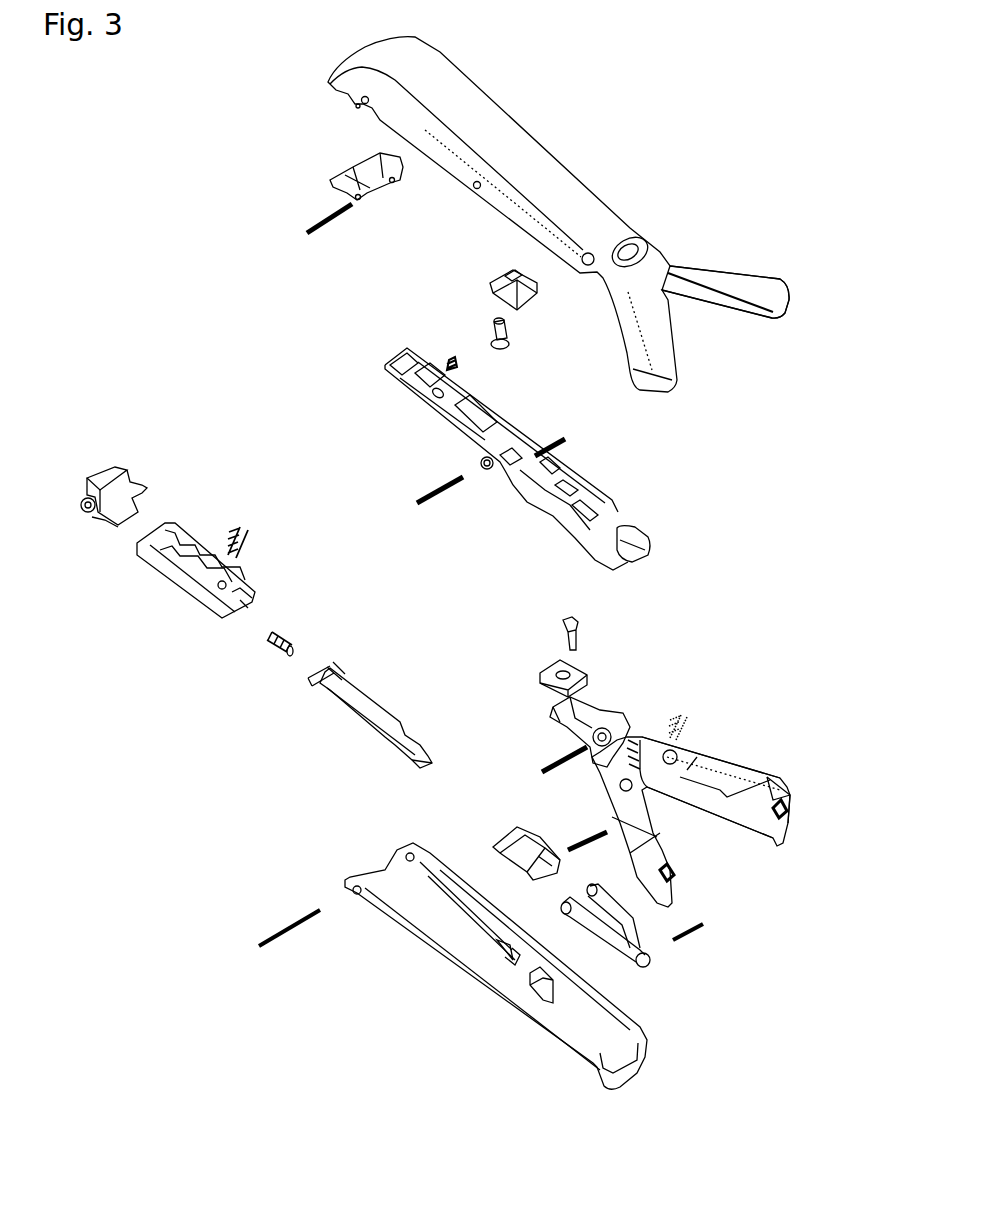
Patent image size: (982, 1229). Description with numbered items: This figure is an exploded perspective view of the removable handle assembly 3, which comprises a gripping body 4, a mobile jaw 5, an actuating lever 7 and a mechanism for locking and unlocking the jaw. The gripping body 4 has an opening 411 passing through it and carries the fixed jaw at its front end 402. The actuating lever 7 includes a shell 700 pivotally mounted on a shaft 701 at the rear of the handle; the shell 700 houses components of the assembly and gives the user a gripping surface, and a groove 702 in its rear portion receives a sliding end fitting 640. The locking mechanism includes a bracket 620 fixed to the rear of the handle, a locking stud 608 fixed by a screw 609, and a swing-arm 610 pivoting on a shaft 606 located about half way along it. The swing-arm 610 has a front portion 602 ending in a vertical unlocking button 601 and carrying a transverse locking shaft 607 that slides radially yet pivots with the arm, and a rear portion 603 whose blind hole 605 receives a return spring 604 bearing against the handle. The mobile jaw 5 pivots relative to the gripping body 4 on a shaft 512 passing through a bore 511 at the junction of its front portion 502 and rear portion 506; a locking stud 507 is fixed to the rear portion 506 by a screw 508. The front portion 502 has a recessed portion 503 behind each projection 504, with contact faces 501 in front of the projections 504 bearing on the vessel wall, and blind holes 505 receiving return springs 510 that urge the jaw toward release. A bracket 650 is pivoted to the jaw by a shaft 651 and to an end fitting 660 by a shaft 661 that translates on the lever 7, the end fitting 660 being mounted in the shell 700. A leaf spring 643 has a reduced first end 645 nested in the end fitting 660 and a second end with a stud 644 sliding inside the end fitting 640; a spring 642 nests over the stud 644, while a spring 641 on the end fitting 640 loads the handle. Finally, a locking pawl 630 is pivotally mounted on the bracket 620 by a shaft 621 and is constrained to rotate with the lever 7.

The removable handle assembly 3 is at (740, 155).
The gripping body 4 is at (565, 178).
The opening 411 is at (645, 259).
The front end 402 is at (740, 273).
The bracket 620 is at (322, 184).
The shaft 621 is at (306, 231).
The locking stud 608 is at (513, 272).
The screw 609 is at (505, 337).
The rear portion 603 is at (415, 357).
The swing-arm 610 is at (372, 370).
The return spring 604 is at (455, 370).
The blind hole 605 is at (436, 395).
The locking shaft 607 is at (567, 437).
The front portion 602 is at (597, 500).
The unlocking button 601 is at (642, 532).
The shaft 606 is at (418, 503).
The locking pawl 630 is at (110, 463).
The spring 641 is at (237, 527).
The end fitting 640 is at (150, 555).
The spring 642 is at (287, 626).
The stud 644 is at (330, 688).
The leaf spring 643 is at (370, 724).
The first end 645 is at (412, 758).
The screw 508 is at (560, 628).
The rear portion 506 is at (603, 707).
The return springs 510 is at (680, 712).
The locking stud 507 is at (550, 687).
The bore 511 is at (596, 735).
The shaft 512 is at (545, 768).
The blind holes 505 is at (620, 784).
The recessed portion 503 is at (714, 774).
The projections 504 is at (774, 793).
The mobile jaw 5 is at (652, 815).
The front portion 502 is at (733, 808).
The contact faces 501 is at (781, 833).
The end fitting 660 is at (515, 833).
The shaft 661 is at (603, 837).
The bracket 650 is at (655, 958).
The shaft 651 is at (700, 940).
The shell 700 is at (408, 932).
The shaft 701 is at (261, 948).
The groove 702 is at (470, 925).
The actuating lever 7 is at (527, 1036).